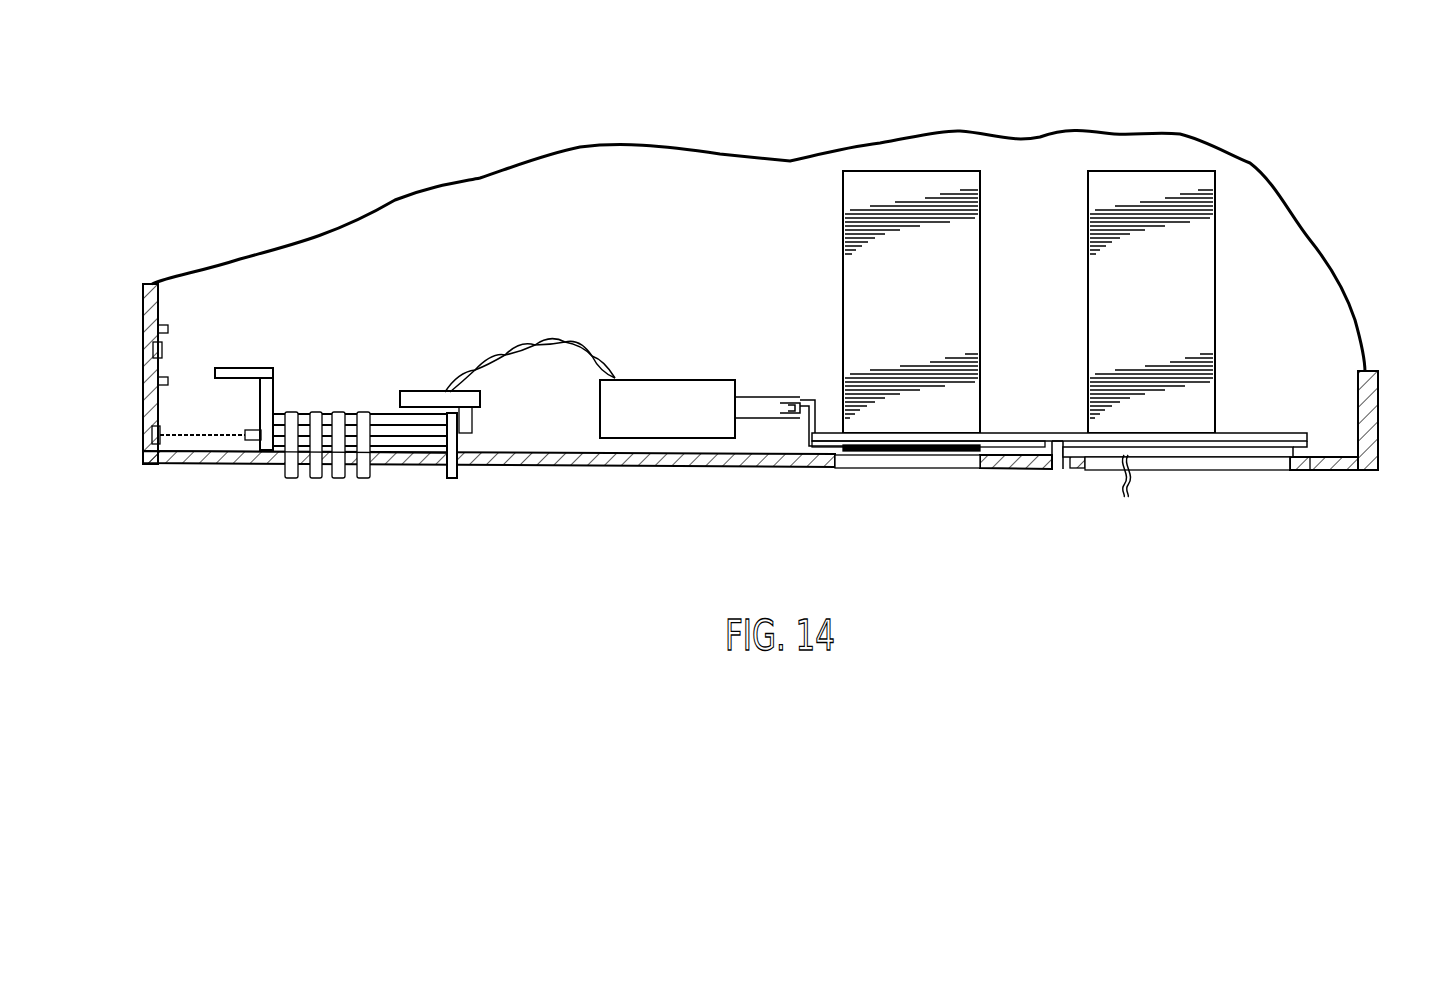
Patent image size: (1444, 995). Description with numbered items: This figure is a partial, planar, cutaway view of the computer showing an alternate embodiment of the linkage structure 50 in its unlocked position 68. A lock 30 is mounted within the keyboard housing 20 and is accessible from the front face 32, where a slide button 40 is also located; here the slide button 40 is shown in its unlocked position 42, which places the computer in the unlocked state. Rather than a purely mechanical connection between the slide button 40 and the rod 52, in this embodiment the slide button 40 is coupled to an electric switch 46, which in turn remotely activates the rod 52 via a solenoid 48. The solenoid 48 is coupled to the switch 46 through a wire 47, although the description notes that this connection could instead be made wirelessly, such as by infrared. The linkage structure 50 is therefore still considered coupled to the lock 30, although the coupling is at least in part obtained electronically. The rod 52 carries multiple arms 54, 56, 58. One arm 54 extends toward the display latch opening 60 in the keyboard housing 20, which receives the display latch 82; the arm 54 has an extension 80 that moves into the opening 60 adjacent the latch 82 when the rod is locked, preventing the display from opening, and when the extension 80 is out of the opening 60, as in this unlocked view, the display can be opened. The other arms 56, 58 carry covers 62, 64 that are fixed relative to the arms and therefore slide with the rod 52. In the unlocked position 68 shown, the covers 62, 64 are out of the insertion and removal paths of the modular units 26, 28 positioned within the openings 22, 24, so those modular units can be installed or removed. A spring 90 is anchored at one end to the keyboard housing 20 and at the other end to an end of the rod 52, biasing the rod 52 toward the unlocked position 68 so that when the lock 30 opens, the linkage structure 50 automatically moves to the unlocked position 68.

The keyboard housing 20 is at (1378, 440).
The opening 22 is at (888, 478).
The opening 24 is at (1115, 480).
The modular unit 26 is at (919, 311).
The modular unit 28 is at (1161, 311).
The lock 30 is at (370, 385).
The front face 32 is at (1312, 470).
The slide button 40 is at (457, 476).
The unlocked position 42 is at (426, 472).
The electric switch 46 is at (443, 391).
The wire 47 is at (565, 345).
The solenoid 48 is at (658, 380).
The linkage structure 50 is at (248, 336).
The rod 52 is at (1232, 444).
The arm 54 is at (273, 368).
The arm 56 is at (1052, 470).
The arm 58 is at (1305, 455).
The display latch opening 60 is at (178, 350).
The cover 62 is at (990, 470).
The cover 64 is at (1230, 470).
The unlocked position 68 is at (1007, 422).
The extension 80 is at (262, 385).
The display latch 82 is at (152, 344).
The spring 90 is at (185, 430).